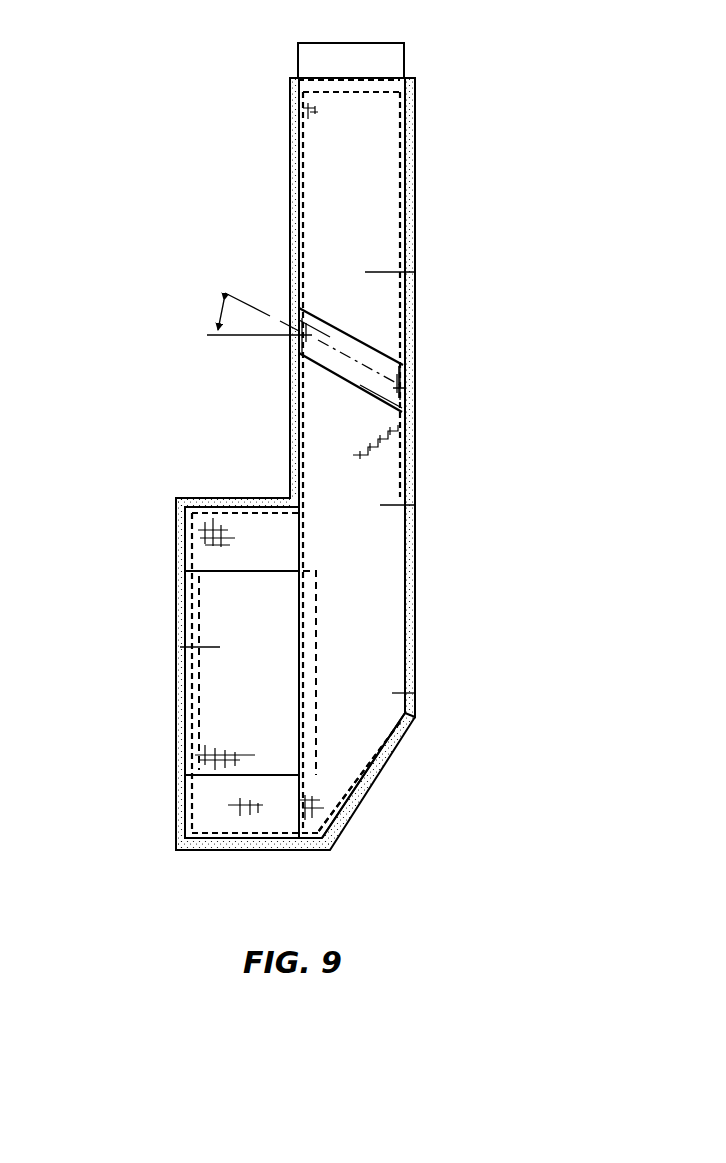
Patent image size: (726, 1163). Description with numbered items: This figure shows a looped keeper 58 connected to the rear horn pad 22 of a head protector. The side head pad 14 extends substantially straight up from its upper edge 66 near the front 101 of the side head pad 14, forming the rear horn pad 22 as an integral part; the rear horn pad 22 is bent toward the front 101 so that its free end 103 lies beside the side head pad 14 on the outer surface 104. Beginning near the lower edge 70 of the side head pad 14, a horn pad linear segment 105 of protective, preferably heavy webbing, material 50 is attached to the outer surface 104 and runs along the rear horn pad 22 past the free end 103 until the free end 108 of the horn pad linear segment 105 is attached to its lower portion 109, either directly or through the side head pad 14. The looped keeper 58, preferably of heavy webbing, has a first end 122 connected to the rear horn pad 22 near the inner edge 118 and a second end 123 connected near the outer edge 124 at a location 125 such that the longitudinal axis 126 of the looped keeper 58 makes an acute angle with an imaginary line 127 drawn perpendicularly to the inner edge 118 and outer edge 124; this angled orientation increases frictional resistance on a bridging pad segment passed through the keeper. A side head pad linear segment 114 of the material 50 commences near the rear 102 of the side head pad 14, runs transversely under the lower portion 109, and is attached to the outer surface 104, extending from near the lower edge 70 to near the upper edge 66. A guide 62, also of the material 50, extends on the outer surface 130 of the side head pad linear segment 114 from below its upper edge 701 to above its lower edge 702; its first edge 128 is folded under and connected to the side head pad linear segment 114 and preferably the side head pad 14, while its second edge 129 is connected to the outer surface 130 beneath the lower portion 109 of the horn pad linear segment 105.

The side head pad 14 is at (155, 534).
The rear horn pad 22 is at (292, 165).
The protective material 50 is at (390, 57).
The looped keeper 58 is at (405, 370).
The guide 62 is at (180, 647).
The upper edge of the side head pad 66 is at (212, 498).
The lower edge of the side head pad 70 is at (367, 795).
The front of the side head pad 101 is at (415, 548).
The rear of the side head pad 102 is at (178, 670).
The free end of the rear horn pad 103 is at (320, 78).
The outer surface of the side head pad 104 is at (412, 678).
The horn pad linear segment 105 is at (415, 272).
The free end of the horn pad linear segment 108 is at (370, 45).
The lower portion of the horn pad linear segment 109 is at (415, 693).
The side head pad linear segment 114 is at (205, 558).
The inner edge of the rear horn pad 118 is at (292, 236).
The first end of the looped keeper 122 is at (290, 352).
The second end of the looped keeper 123 is at (408, 402).
The outer edge of the rear horn pad 124 is at (413, 327).
The location of the second end connection 125 is at (408, 380).
The longitudinal axis of the looped keeper 126 is at (240, 300).
The imaginary line 127 is at (237, 336).
The first edge of the guide 128 is at (198, 712).
The second edge of the guide 129 is at (372, 757).
The outer surface of the side head pad linear segment 130 is at (269, 527).
The upper edge of the side head pad linear segment 701 is at (235, 500).
The lower edge of the side head pad linear segment 702 is at (232, 835).